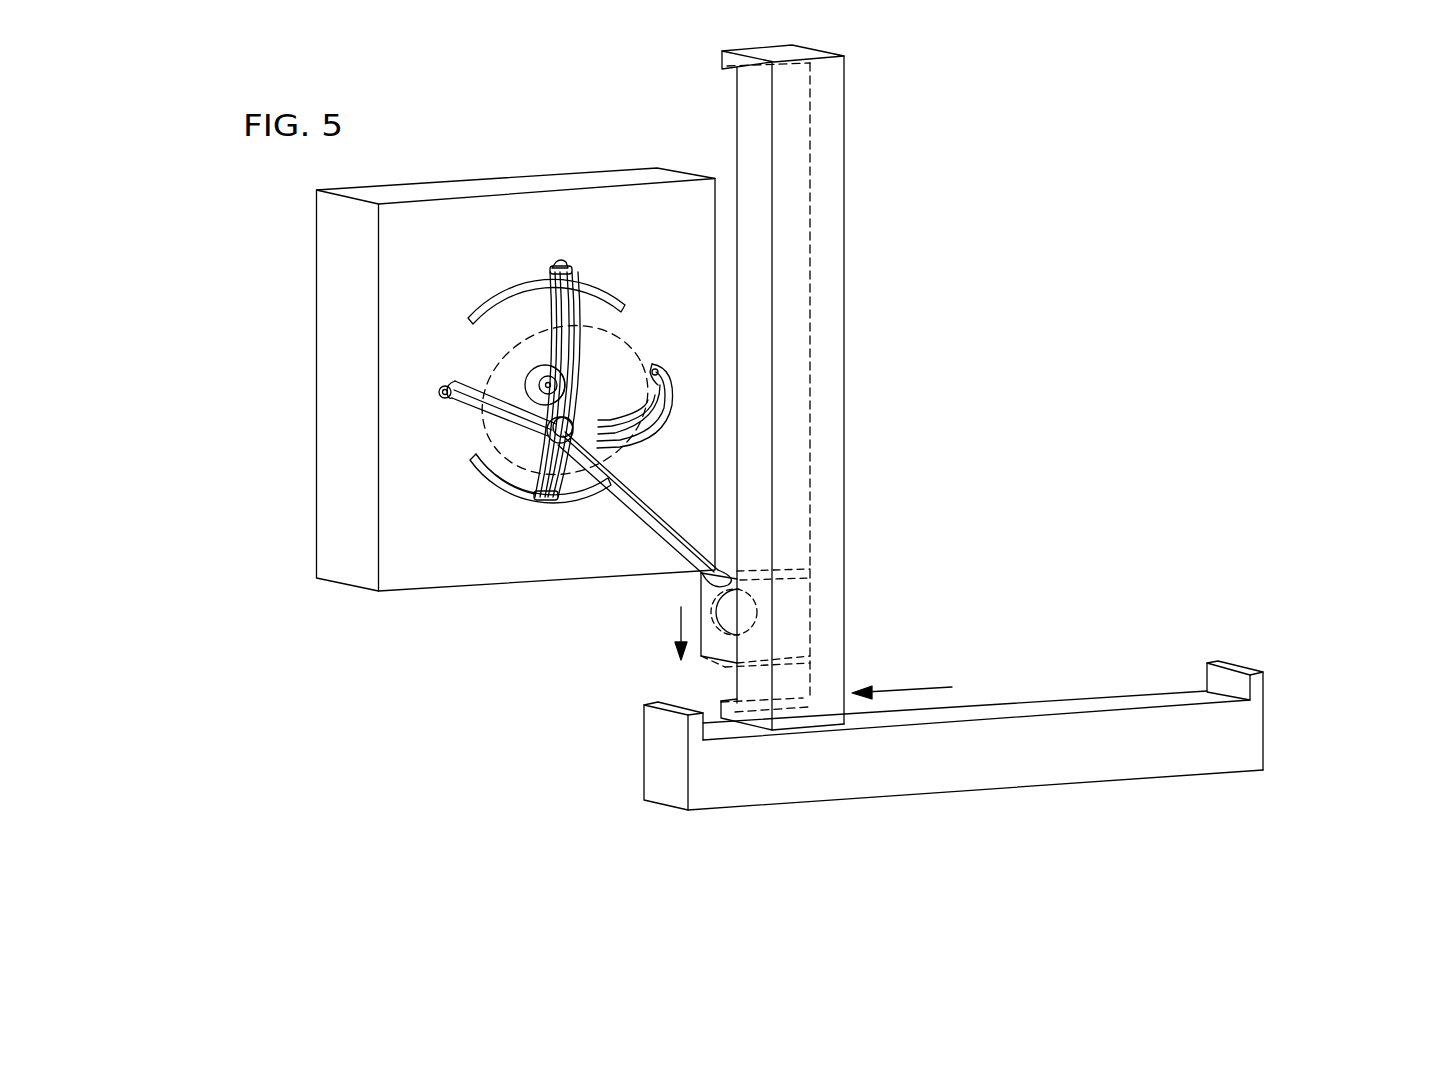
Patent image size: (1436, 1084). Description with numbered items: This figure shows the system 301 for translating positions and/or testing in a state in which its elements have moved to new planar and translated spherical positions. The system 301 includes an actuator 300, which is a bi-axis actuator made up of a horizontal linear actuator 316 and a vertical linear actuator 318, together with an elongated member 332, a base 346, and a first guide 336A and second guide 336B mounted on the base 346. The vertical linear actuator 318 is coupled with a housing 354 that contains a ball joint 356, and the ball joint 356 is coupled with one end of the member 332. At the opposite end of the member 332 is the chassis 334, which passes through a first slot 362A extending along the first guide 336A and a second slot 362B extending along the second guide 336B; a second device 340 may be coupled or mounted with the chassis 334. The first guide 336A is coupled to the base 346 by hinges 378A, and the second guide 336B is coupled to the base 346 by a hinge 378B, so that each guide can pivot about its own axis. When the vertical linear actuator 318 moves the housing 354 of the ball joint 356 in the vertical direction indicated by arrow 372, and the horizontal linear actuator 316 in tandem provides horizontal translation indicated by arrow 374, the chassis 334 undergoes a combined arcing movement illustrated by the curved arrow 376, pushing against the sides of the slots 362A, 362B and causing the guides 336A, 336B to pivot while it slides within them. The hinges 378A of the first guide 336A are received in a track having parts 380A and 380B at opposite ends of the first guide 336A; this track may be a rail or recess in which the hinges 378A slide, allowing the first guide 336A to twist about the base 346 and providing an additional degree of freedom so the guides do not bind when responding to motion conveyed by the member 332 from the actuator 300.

The actuator 300 is at (1277, 698).
The system 301 is at (947, 243).
The horizontal linear actuator 316 is at (1113, 755).
The vertical linear actuator 318 is at (837, 327).
The member 332 is at (640, 497).
The chassis 334 is at (528, 490).
The first guide 336A is at (557, 312).
The second guide 336B is at (462, 412).
The second device 340 is at (480, 470).
The base 346 is at (347, 560).
The housing 354 is at (757, 568).
The ball joint 356 is at (763, 622).
The first slot 362A is at (572, 297).
The second slot 362B is at (465, 398).
The arrow 372 is at (678, 618).
The arrow 374 is at (912, 686).
The curved arrow 376 is at (583, 400).
The hinge 378A is at (552, 268).
The hinge 378B is at (447, 385).
The track part 380A is at (566, 268).
The track part 380B is at (575, 497).